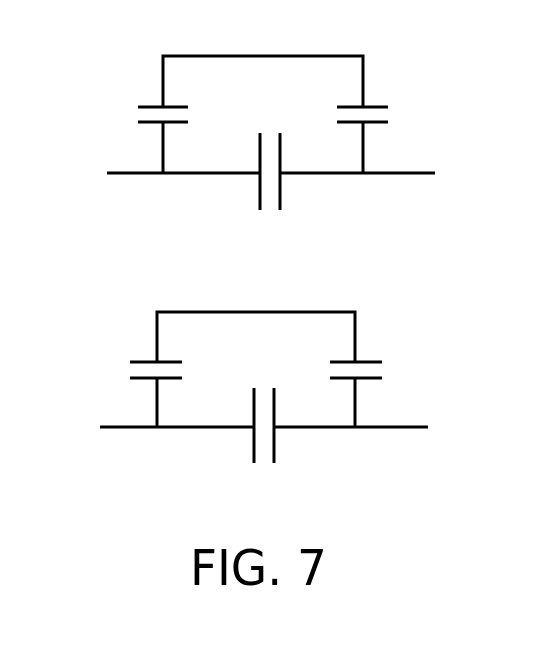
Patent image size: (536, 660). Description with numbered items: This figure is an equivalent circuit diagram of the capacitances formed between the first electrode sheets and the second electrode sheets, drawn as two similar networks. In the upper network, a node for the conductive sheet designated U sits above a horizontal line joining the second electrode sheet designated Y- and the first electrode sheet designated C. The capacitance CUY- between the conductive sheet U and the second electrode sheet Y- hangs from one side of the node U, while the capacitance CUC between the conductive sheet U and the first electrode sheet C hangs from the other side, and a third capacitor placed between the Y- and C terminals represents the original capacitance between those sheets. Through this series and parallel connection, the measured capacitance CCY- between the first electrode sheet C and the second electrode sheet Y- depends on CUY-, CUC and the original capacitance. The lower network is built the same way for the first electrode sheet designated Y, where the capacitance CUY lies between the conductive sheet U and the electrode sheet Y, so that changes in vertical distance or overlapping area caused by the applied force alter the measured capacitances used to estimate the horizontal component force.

The capacitance Cuy− CUY- is at (130, 122).
The capacitance Cuc CUC is at (393, 123).
The capacitance Ccy− CCY- is at (269, 194).
The conductive sheet designation U is at (265, 159).
The second electrode sheet designation Y− Y- is at (124, 196).
The first electrode sheet designation C is at (420, 196).
The capacitance Cuy CUY is at (124, 377).
The first electrode sheet designation Y is at (120, 456).